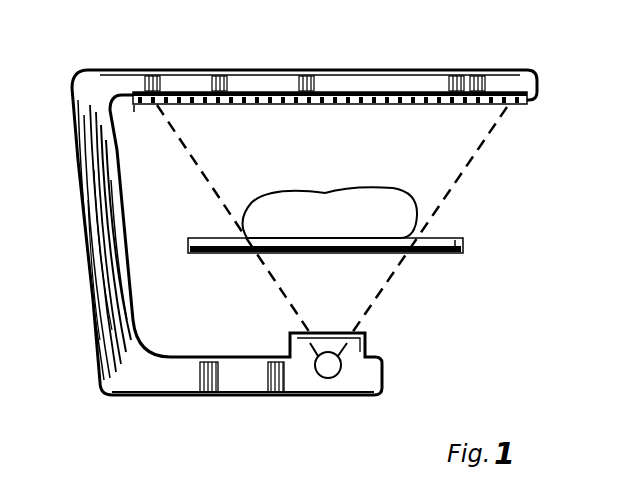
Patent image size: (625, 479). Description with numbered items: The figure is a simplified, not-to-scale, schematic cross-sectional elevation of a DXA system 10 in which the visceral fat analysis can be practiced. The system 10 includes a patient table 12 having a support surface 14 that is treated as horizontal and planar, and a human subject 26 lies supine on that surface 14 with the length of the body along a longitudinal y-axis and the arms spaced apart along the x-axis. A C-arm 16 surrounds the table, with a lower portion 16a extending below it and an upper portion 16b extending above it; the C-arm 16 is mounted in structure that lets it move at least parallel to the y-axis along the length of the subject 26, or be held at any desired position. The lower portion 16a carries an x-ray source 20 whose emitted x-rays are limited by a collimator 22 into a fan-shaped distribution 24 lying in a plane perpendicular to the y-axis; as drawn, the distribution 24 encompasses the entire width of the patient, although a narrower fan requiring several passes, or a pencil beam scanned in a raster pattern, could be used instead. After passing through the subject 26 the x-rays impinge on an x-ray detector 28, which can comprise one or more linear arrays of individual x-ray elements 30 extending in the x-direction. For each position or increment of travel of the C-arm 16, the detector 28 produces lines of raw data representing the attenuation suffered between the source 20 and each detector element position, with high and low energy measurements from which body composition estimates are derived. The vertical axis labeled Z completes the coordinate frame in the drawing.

The DXA system 10 is at (526, 193).
The patient table 12 is at (212, 253).
The support surface 14 is at (453, 237).
The C-arm 16 is at (83, 182).
The lower portion of the C-arm 16a is at (183, 396).
The upper portion of the C-arm 16b is at (113, 70).
The x-ray source 20 is at (341, 363).
The collimator 22 is at (352, 333).
The fan-shaped distribution 24 is at (178, 150).
The human subject 26 is at (327, 192).
The x-ray detector 28 is at (242, 105).
The x-ray elements 30 is at (327, 105).
The optical axis Z is at (328, 365).